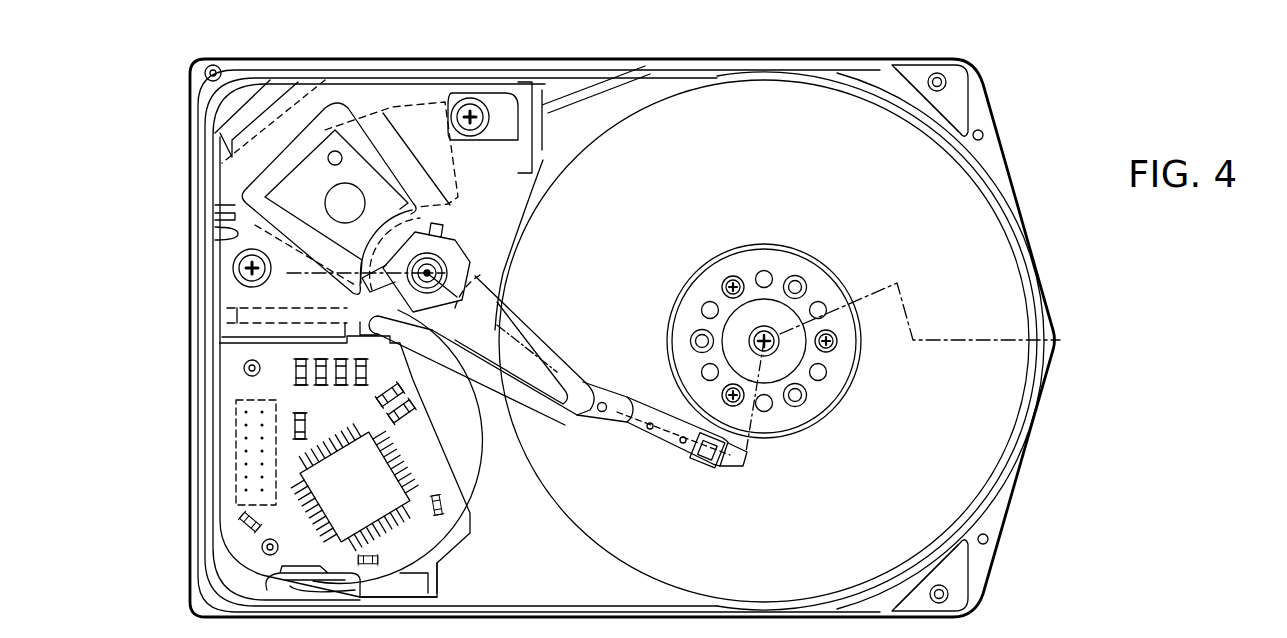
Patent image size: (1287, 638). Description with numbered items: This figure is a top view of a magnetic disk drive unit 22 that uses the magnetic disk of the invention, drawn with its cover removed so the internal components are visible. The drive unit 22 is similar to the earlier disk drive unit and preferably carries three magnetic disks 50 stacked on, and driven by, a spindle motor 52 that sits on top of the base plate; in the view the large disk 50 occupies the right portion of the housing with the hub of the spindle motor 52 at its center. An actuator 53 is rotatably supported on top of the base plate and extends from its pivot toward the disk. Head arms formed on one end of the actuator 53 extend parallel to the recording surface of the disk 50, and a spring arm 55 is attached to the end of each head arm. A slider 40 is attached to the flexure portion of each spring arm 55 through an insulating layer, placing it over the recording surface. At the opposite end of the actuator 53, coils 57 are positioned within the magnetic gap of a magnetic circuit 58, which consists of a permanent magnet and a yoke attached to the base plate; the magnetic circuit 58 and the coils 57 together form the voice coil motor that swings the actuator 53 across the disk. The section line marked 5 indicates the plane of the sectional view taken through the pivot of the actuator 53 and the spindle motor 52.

The magnetic disk drive unit 22 is at (985, 88).
The slider 40 is at (704, 458).
The magnetic disk 50 is at (957, 446).
The spindle motor 52 is at (800, 440).
The actuator 53 is at (548, 326).
The spring arm 55 is at (655, 448).
The coils 57 is at (322, 128).
The magnetic circuit 58 is at (428, 93).
The section line 5- 5 is at (205, 273).